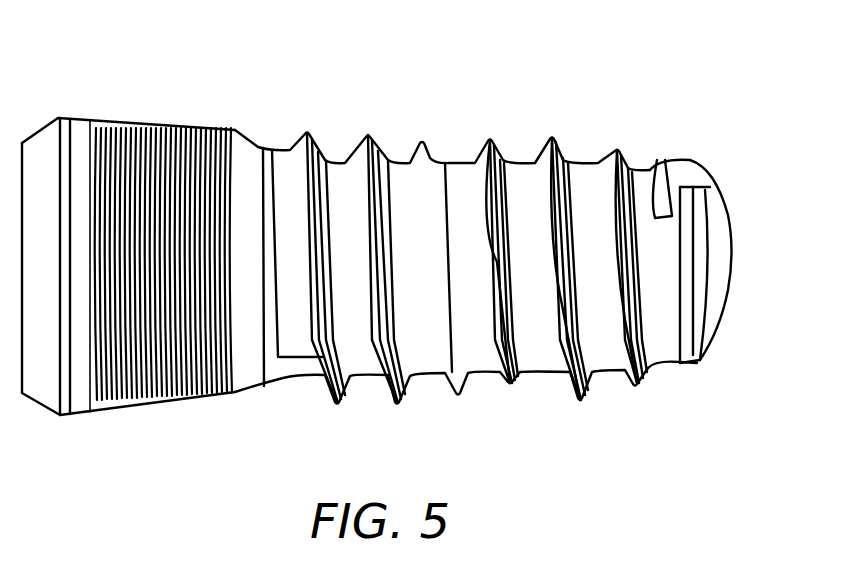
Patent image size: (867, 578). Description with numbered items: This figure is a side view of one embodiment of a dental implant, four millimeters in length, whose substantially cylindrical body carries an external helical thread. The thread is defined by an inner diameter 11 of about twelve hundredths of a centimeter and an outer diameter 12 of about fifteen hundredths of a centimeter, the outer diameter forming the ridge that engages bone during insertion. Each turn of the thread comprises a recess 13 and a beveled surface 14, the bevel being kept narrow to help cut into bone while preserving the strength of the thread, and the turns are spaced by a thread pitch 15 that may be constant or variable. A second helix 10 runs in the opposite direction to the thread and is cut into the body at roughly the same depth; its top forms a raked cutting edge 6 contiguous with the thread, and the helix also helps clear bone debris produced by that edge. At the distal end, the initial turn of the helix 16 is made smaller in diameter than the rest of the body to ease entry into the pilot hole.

The cutting edge 6 is at (375, 249).
The second helix 10 is at (492, 140).
The inner diameter 11 is at (466, 178).
The outer diameter 12 is at (553, 139).
The recess 13 is at (388, 265).
The beveled surface 14 is at (368, 138).
The thread pitch 15 is at (620, 162).
The initial turn of the helix 16 is at (728, 324).